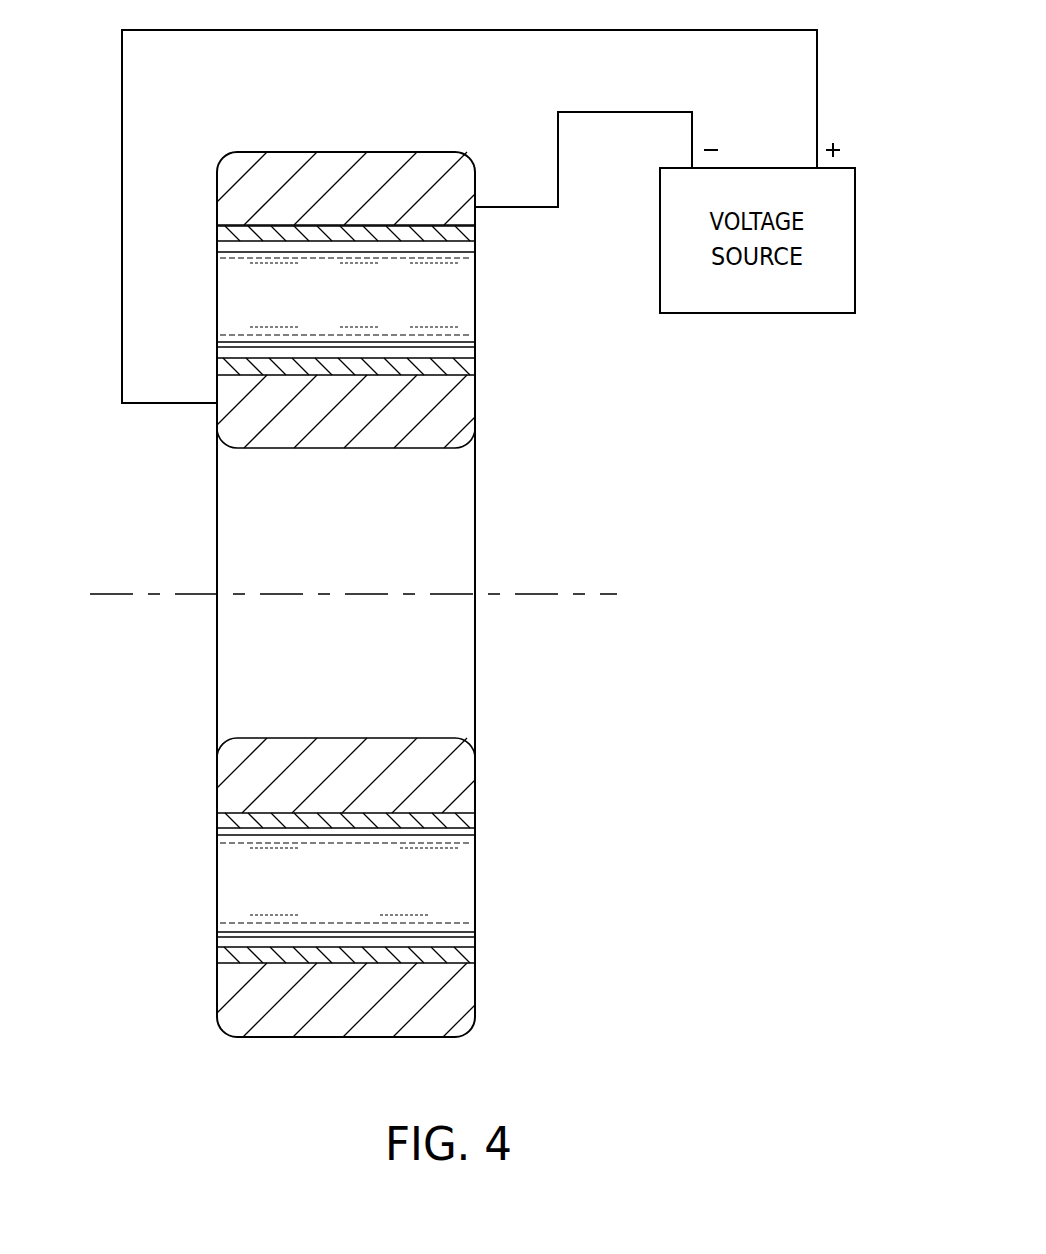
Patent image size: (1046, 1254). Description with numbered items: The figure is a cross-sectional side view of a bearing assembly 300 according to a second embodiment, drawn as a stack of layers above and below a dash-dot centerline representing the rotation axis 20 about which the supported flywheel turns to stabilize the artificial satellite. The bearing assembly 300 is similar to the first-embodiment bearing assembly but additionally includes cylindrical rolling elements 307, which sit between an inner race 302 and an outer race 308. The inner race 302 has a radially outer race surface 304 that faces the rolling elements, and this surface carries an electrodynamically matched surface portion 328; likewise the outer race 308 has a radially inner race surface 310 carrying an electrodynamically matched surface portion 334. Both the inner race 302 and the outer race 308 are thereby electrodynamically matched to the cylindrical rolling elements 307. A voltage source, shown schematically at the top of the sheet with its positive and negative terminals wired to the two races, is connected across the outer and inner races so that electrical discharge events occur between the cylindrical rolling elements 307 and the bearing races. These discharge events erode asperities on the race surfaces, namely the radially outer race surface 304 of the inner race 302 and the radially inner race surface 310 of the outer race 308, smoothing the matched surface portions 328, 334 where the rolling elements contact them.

The rotation axis 20 is at (590, 594).
The bearing assembly 300 is at (128, 857).
The inner race 302 is at (452, 767).
The radially outer race surface 304 is at (312, 830).
The cylindrical rolling elements 307 is at (452, 902).
The outer race 308 is at (472, 1020).
The radially inner race surface 310 is at (382, 947).
The electrodynamically matched surface portion 328 is at (407, 820).
The electrodynamically matched surface portion 334 is at (278, 962).